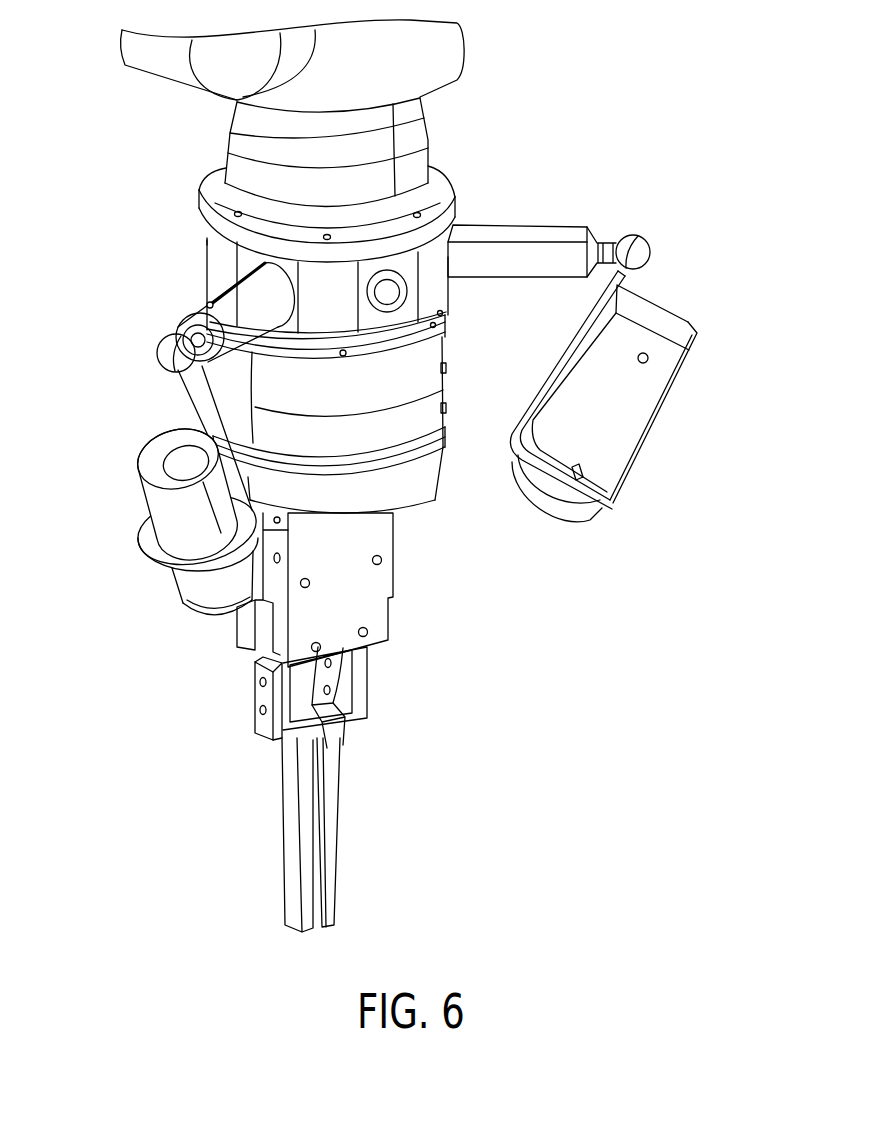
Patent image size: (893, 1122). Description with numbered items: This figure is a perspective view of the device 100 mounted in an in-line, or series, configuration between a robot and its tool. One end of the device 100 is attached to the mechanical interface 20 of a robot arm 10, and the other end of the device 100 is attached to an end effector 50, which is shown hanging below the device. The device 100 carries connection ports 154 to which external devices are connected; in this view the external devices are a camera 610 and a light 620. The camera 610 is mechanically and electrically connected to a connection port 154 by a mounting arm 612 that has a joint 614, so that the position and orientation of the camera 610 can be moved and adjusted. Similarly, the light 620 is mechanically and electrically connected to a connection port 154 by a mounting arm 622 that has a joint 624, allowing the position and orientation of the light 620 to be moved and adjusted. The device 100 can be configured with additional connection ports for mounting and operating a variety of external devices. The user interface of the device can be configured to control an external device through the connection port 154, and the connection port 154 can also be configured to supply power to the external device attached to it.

The robot arm 10 is at (497, 70).
The mechanical interface 20 is at (428, 182).
The device 100 is at (130, 251).
The connection port 154 is at (453, 226).
The mounting arm 612 is at (558, 226).
The joint 614 is at (645, 232).
The camera 610 is at (687, 448).
The mounting arm 622 is at (208, 302).
The joint 624 is at (158, 355).
The light 620 is at (103, 515).
The end effector 50 is at (202, 725).